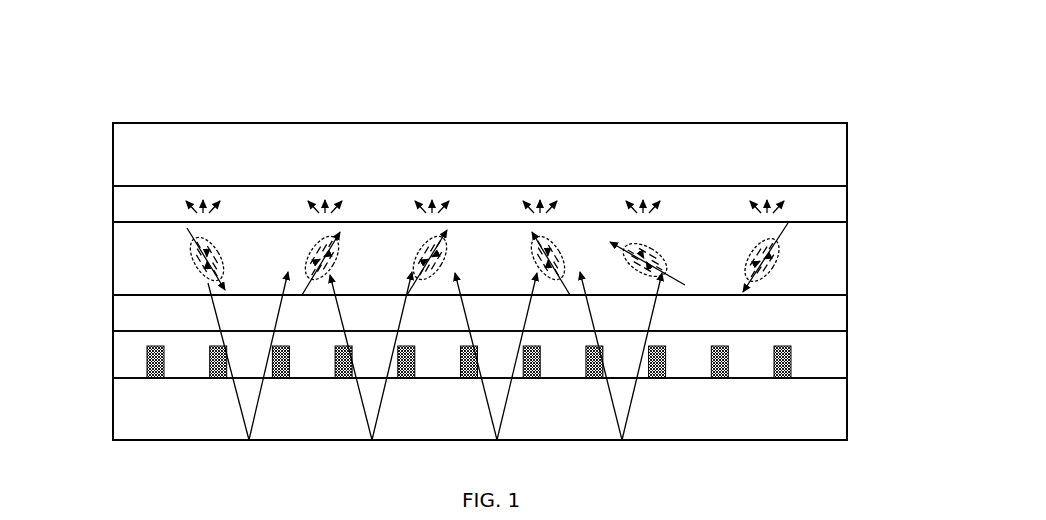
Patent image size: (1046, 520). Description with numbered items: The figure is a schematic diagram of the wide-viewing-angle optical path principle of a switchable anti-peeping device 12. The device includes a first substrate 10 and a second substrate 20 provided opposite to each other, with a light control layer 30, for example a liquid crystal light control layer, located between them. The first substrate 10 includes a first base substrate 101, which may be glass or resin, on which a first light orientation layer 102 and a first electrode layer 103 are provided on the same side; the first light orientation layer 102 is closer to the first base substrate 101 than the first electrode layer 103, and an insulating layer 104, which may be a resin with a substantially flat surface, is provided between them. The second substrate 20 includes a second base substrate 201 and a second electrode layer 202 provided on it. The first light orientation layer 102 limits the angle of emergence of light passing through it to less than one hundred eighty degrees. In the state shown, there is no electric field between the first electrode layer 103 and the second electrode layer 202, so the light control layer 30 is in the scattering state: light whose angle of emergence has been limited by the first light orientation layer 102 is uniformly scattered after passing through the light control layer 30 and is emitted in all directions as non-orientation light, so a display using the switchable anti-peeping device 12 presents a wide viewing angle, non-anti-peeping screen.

The switchable anti-peeping device 12 is at (630, 68).
The second substrate 20 is at (95, 122).
The second base substrate 201 is at (836, 178).
The second electrode layer 202 is at (836, 209).
The light control layer 30 is at (145, 258).
The first substrate 10 is at (95, 293).
The first base substrate 101 is at (835, 413).
The first light orientation layer 102 is at (791, 363).
The first electrode layer 103 is at (830, 313).
The insulating layer 104 is at (826, 351).